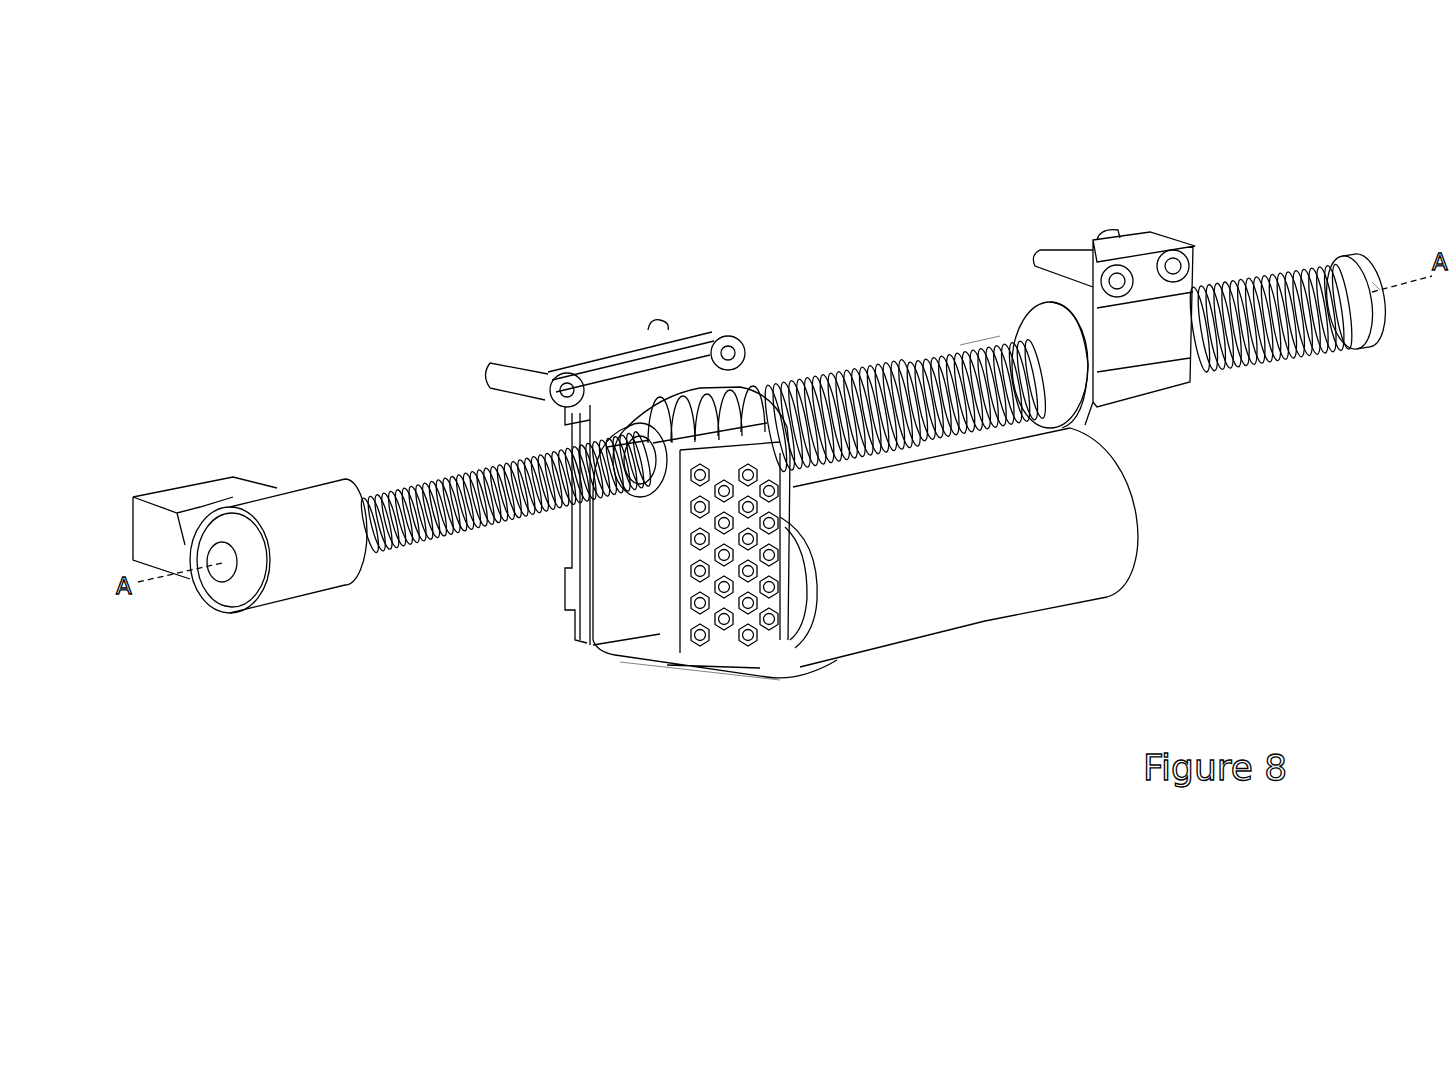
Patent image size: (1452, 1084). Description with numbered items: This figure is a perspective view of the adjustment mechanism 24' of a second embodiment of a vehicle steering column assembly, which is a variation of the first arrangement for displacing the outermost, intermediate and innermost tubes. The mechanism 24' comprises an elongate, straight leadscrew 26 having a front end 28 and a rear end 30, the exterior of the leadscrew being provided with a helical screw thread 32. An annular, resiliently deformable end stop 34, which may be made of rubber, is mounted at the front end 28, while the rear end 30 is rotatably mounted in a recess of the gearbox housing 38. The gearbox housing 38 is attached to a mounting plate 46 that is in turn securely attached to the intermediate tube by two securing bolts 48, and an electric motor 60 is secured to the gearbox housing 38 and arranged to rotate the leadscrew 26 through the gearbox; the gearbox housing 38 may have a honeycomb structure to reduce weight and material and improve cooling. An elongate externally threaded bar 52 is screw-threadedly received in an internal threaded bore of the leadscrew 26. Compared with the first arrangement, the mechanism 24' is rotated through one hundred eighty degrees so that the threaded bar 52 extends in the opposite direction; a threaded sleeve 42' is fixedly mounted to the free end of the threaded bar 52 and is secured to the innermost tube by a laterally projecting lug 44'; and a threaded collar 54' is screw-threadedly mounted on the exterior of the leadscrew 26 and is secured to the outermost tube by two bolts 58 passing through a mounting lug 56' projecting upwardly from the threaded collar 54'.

The mechanism 24' is at (700, 754).
The leadscrew 26 is at (840, 365).
The front end 28 is at (1380, 287).
The rear end 30 is at (222, 570).
The helical screw thread 32 is at (990, 338).
The end stop 34 is at (1367, 310).
The gearbox housing 38 is at (594, 643).
The threaded sleeve 42' is at (303, 558).
The laterally projecting lug 44' is at (200, 502).
The mounting plate 46 is at (617, 350).
The securing bolts 48 is at (517, 367).
The threaded bar 52 is at (455, 495).
The threaded collar 54' is at (1140, 340).
The mounting lug 56' is at (1138, 365).
The bolts 58 is at (1047, 252).
The electric motor 60 is at (1030, 608).